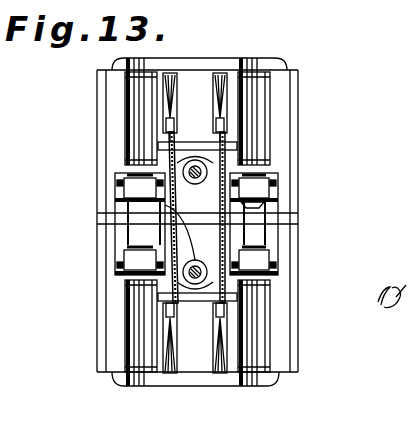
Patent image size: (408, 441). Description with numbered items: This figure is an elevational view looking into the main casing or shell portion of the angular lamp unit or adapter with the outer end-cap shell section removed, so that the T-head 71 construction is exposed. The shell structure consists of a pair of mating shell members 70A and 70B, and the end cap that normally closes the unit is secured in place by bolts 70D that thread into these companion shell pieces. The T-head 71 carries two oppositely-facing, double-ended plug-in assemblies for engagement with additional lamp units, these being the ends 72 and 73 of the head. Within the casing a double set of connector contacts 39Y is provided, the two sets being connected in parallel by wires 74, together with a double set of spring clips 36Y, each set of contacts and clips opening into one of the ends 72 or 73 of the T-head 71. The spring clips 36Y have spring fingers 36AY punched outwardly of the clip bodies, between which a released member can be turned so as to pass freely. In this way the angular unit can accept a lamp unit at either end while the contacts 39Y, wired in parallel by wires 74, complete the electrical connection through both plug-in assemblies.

The T-head 71 is at (292, 142).
The shell member 70A is at (292, 96).
The shell member 70B is at (294, 302).
The bolts 70D is at (172, 234).
The plug-in assembly 72 is at (281, 384).
The plug-in assembly 73 is at (278, 62).
The wires 74 is at (220, 213).
The spring clips 36Y is at (118, 187).
The spring fingers 36AY is at (261, 205).
The connector contacts 39Y is at (216, 84).